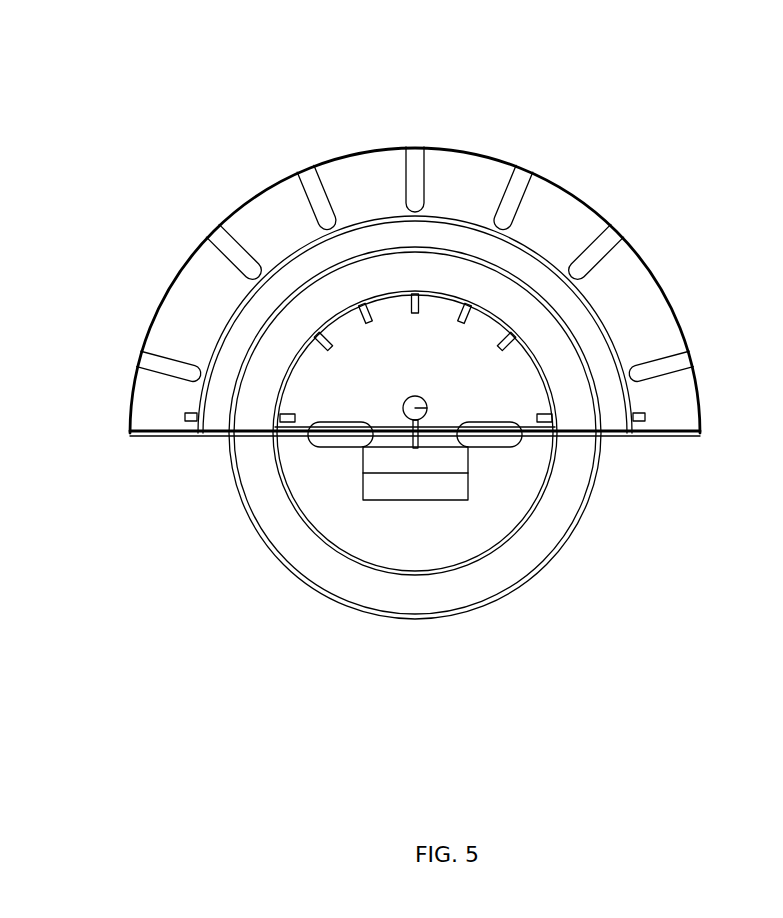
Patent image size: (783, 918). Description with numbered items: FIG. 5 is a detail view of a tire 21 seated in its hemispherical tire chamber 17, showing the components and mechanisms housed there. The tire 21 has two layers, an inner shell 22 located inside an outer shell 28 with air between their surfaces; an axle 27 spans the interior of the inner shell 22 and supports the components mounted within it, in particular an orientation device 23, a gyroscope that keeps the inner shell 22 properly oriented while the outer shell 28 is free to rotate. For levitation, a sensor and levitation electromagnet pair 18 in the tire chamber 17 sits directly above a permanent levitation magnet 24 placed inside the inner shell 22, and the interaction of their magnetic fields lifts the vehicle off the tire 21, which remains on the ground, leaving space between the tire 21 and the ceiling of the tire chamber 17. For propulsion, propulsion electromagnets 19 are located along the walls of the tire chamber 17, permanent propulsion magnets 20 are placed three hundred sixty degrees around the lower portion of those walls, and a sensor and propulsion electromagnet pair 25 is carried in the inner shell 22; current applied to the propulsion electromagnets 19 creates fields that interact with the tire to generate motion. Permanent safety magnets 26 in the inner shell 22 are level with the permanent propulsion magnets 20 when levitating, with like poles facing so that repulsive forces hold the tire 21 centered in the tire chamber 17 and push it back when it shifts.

The tire chamber 17 is at (368, 148).
The sensor and levitation electromagnet pair 18 is at (226, 247).
The propulsion electromagnet 19 is at (145, 362).
The permanent propulsion magnet 20 is at (191, 421).
The tire 21 is at (389, 651).
The inner shell 22 is at (367, 572).
The orientation device 23 is at (418, 412).
The permanent levitation magnet 24 is at (367, 318).
The sensor and propulsion electromagnet pair 25 is at (334, 448).
The permanent safety magnet 26 is at (279, 426).
The axle 27 is at (300, 439).
The outer shell 28 is at (508, 600).